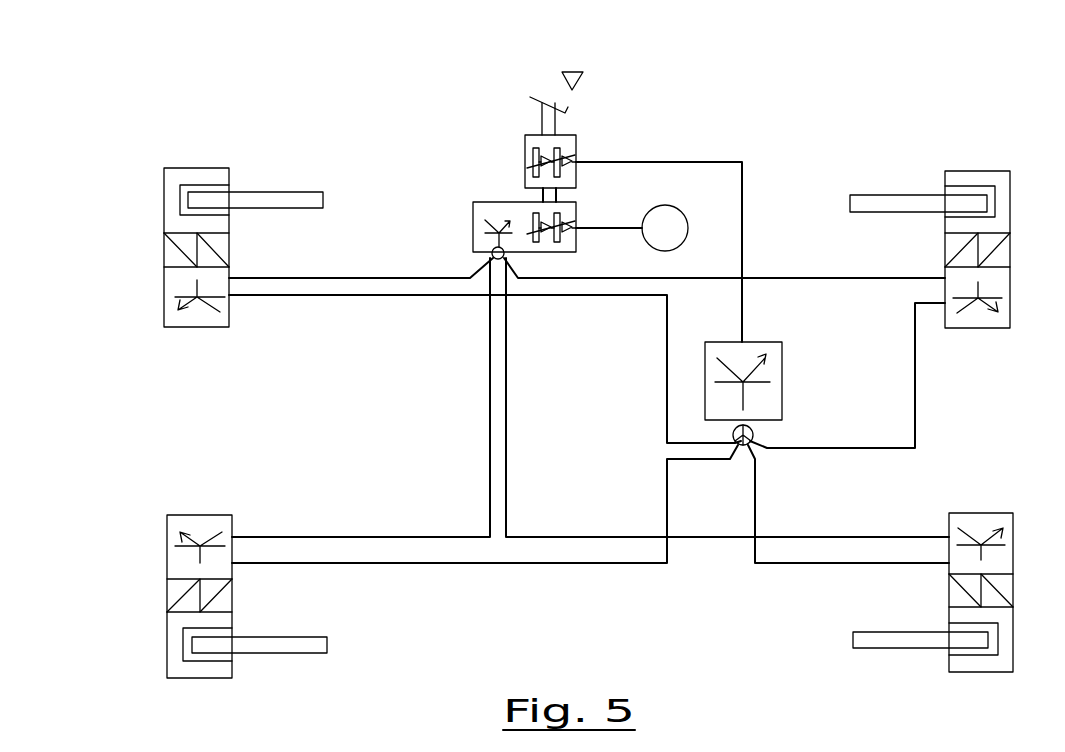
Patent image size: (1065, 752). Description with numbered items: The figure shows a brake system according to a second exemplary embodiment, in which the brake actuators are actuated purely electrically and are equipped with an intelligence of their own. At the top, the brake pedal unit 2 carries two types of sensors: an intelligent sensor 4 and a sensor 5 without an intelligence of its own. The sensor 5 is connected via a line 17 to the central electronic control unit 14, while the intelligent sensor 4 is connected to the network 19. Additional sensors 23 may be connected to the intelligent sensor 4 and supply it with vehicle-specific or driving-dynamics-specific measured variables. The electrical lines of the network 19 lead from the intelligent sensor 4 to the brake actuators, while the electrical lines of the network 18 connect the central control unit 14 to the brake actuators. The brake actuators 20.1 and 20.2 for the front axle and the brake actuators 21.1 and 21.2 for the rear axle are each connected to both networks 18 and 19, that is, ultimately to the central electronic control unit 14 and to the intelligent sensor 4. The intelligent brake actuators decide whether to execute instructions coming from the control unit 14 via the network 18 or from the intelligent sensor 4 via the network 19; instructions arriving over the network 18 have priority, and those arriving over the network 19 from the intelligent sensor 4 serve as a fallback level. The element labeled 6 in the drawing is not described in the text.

The brake pedal unit 2 is at (572, 72).
The intelligent sensor 4 is at (500, 207).
The sensor 5 is at (573, 140).
The pump drive 6 is at (553, 112).
The central electronic control unit 14 is at (757, 348).
The line 17 is at (698, 160).
The network 18 is at (752, 430).
The network 19 is at (492, 256).
The brake actuator 20.1 is at (193, 172).
The brake actuator 20.2 is at (193, 520).
The brake actuator 21.1 is at (972, 177).
The brake actuator 21.2 is at (982, 518).
The additional sensors 23 is at (666, 205).